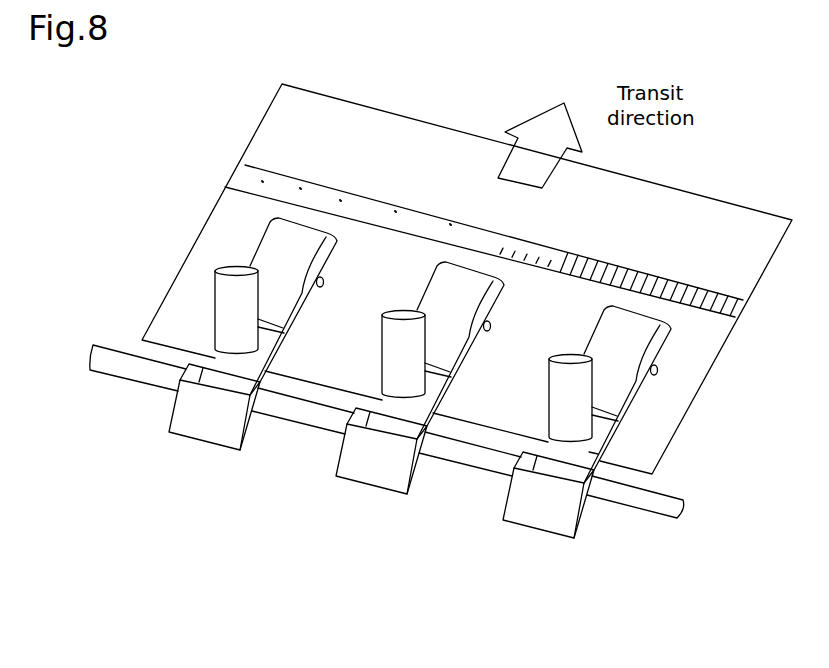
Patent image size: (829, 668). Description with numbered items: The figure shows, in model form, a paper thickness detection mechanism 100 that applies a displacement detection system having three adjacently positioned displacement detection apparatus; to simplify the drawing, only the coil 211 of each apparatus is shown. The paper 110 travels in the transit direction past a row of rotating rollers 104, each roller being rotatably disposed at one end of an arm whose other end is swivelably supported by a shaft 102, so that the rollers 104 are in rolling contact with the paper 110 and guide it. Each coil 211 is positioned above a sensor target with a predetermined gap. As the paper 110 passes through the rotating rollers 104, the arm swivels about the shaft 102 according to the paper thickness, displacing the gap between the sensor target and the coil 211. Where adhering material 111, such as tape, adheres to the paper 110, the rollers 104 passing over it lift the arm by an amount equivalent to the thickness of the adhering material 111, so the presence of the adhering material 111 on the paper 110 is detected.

The paper thickness detection mechanism 100 is at (275, 545).
The shaft 102 is at (638, 497).
The rotating roller 104 is at (278, 253).
The paper 110 is at (627, 207).
The adhering material 111 is at (258, 180).
The coil 211 is at (241, 298).